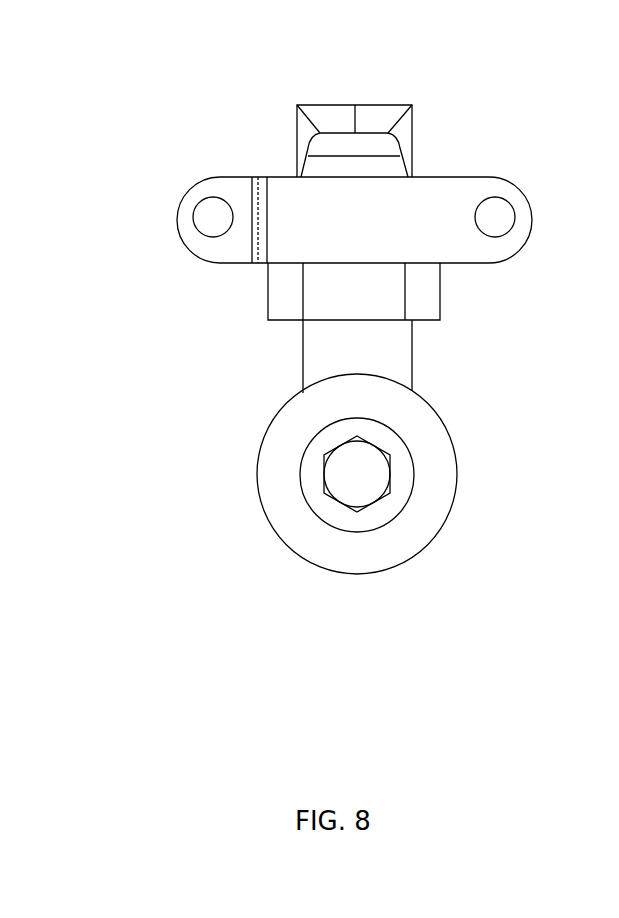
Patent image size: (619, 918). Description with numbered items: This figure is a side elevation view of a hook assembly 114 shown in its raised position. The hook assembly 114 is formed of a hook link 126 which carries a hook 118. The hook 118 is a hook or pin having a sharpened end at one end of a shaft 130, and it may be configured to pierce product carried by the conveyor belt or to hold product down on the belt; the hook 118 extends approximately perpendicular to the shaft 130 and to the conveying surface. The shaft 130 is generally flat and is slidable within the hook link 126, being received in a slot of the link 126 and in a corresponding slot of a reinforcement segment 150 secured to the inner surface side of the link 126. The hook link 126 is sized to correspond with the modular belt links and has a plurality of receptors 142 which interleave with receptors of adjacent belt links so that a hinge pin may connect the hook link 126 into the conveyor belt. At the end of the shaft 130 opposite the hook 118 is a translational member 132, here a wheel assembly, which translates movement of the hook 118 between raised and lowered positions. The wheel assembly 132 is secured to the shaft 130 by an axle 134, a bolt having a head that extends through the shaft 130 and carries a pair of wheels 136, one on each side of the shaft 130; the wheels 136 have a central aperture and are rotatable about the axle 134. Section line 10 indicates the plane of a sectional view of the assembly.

The section line 10 is at (572, 95).
The hook assembly 114 is at (217, 122).
The hook 118 is at (403, 138).
The hook link 126 is at (438, 208).
The receptors 142 is at (205, 233).
The reinforcement segment 150 is at (287, 298).
The shaft 130 is at (395, 348).
The translational member 132 is at (480, 462).
The wheels 136 is at (258, 474).
The axle 134 is at (347, 485).